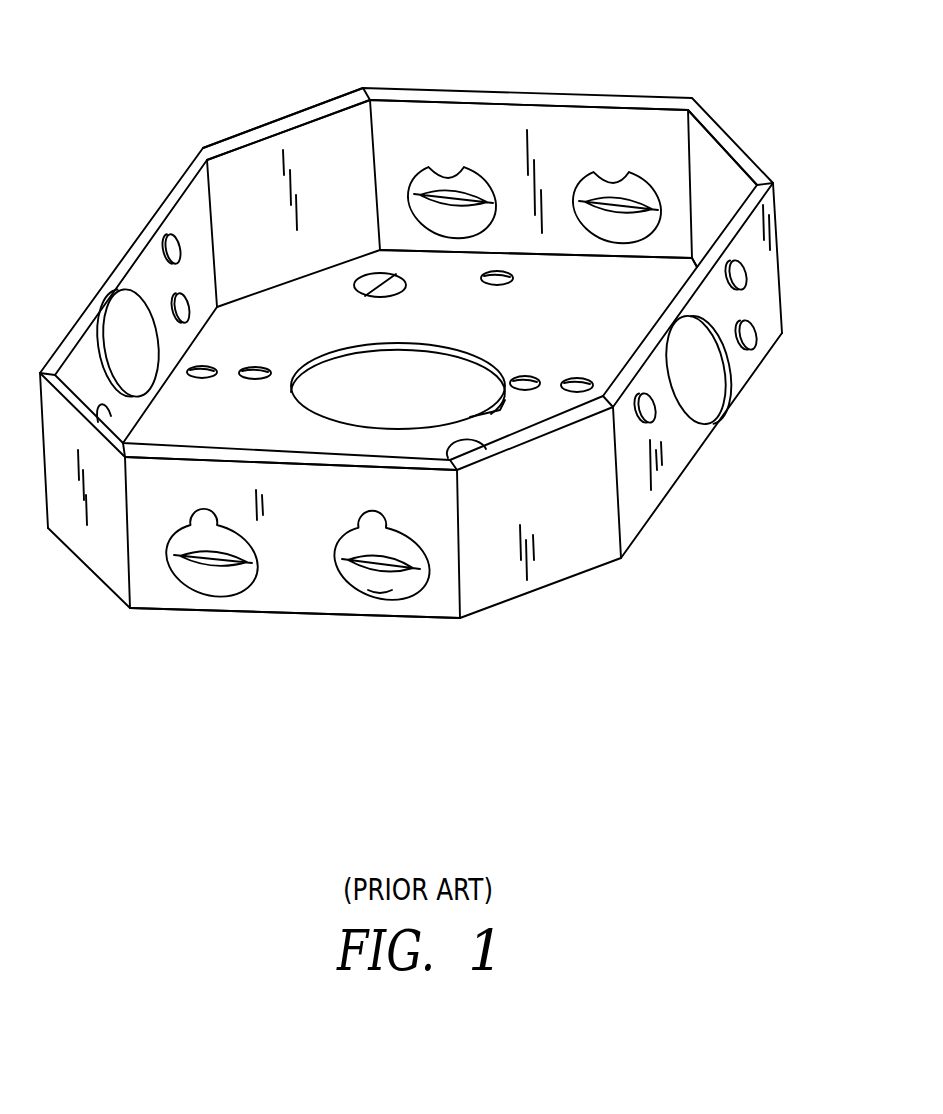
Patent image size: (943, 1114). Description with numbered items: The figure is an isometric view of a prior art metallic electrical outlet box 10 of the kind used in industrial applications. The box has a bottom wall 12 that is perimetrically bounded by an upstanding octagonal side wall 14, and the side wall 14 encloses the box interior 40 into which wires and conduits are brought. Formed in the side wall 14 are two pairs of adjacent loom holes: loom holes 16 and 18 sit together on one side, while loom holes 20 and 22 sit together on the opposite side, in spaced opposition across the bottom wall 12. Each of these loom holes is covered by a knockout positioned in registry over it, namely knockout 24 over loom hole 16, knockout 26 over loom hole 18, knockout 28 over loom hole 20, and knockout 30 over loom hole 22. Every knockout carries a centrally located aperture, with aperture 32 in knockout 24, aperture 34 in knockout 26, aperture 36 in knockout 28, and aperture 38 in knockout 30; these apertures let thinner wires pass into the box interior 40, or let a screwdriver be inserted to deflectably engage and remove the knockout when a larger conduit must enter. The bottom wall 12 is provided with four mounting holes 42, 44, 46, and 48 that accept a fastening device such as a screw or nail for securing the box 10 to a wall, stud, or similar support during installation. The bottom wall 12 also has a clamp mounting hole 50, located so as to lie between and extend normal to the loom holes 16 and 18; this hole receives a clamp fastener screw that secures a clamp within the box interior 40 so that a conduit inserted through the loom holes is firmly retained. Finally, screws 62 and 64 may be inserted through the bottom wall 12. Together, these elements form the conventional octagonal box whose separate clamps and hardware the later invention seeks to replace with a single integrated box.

The outlet box 10 is at (148, 42).
The bottom wall 12 is at (250, 312).
The side wall 14 is at (230, 163).
The loom hole 16 is at (477, 163).
The loom hole 18 is at (578, 172).
The loom hole 20 is at (231, 598).
The loom hole 22 is at (372, 600).
The knockout 24 is at (420, 180).
The knockout 26 is at (627, 200).
The knockout 28 is at (220, 577).
The knockout 30 is at (393, 588).
The aperture 32 is at (447, 200).
The aperture 34 is at (643, 188).
The aperture 36 is at (200, 562).
The aperture 38 is at (407, 573).
The box interior 40 is at (357, 120).
The mounting hole 42 is at (214, 378).
The mounting hole 44 is at (266, 364).
The mounting hole 46 is at (527, 376).
The mounting hole 48 is at (578, 378).
The clamp mounting hole 50 is at (506, 281).
The screw 62 is at (390, 298).
The screw 64 is at (462, 437).